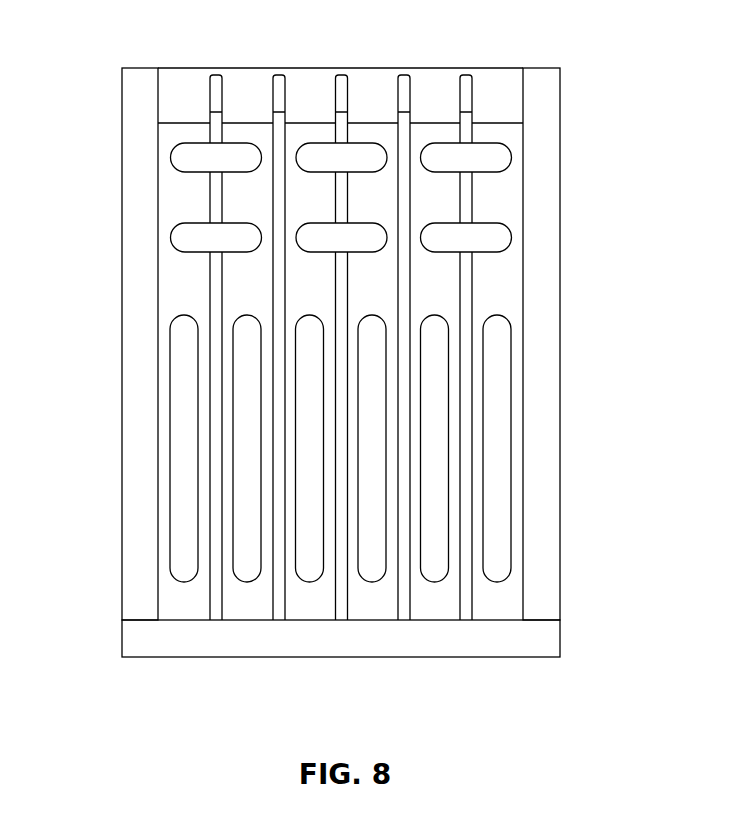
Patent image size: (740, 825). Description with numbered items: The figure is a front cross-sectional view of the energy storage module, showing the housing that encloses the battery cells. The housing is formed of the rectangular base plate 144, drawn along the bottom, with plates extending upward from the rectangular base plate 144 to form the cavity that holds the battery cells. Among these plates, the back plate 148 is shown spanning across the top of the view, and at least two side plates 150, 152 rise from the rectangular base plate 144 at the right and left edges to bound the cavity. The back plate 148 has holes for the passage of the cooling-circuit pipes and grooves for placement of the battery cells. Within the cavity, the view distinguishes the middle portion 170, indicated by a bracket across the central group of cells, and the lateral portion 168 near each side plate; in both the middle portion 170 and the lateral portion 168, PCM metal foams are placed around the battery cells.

The rectangular base plate 144 is at (328, 648).
The back plate 148 is at (167, 90).
The side plate 150 is at (538, 405).
The side plate 152 is at (138, 375).
The lateral portion 168 is at (177, 607).
The middle portion 170 is at (225, 66).